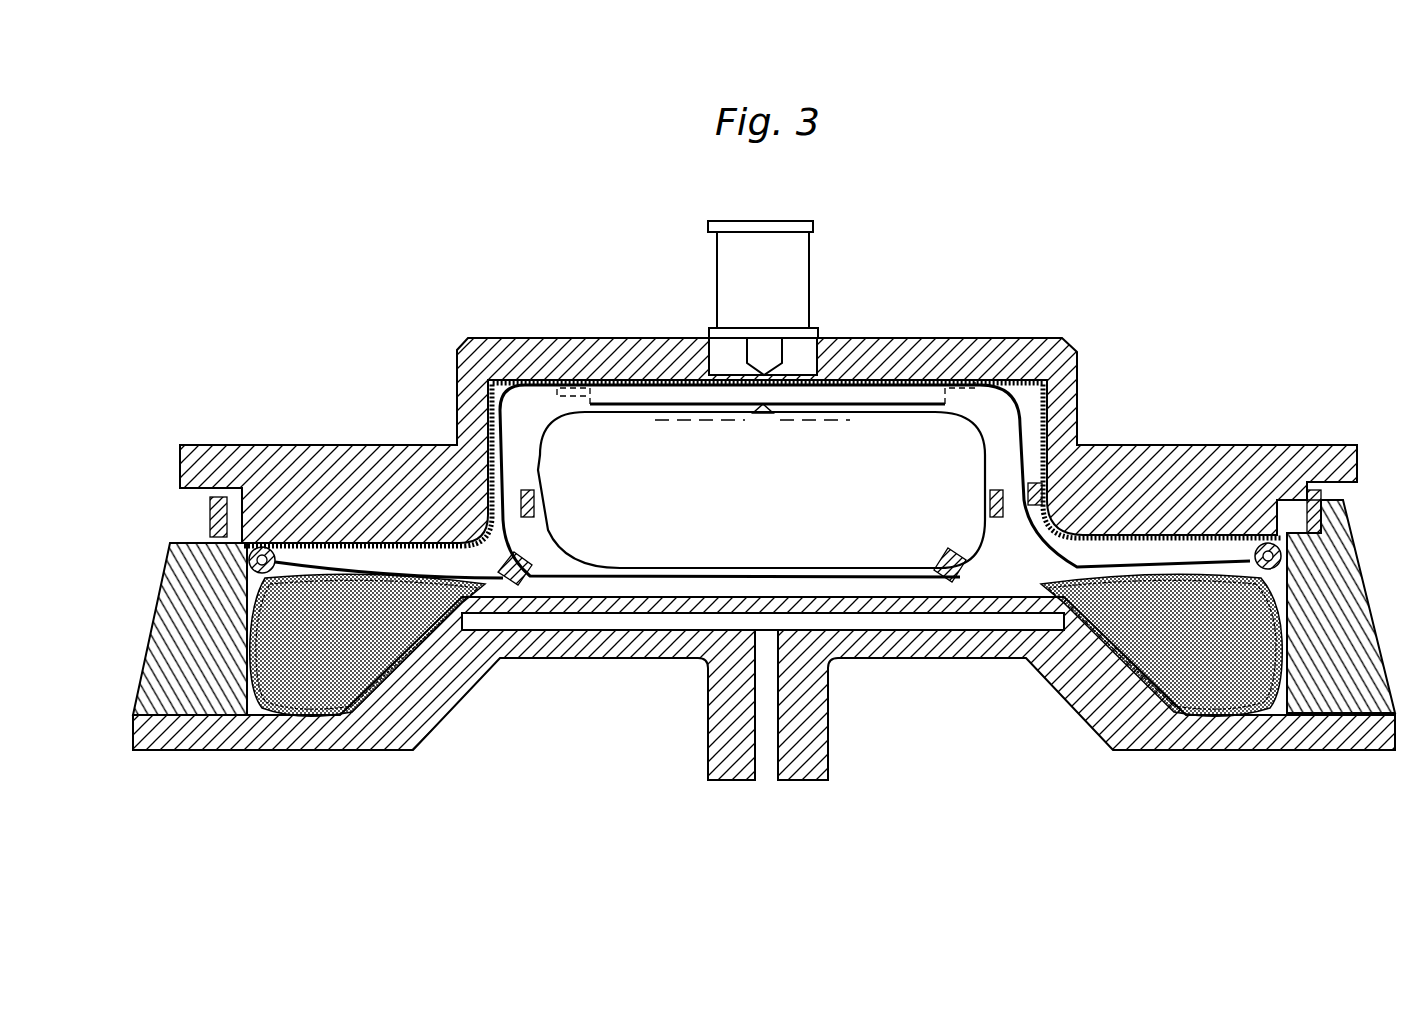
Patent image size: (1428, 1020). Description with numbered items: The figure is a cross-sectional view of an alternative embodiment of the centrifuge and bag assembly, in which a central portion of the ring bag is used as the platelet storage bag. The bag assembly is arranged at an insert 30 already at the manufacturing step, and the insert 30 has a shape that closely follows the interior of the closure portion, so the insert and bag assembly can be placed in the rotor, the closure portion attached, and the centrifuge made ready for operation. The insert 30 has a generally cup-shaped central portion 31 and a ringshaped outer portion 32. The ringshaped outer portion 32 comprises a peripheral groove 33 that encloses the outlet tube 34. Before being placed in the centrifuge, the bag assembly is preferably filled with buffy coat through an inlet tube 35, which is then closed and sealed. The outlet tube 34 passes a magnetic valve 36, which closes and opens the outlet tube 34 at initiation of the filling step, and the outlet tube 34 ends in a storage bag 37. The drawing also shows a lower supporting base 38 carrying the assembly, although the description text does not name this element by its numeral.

The insert 30 is at (905, 410).
The central portion 31 is at (510, 380).
The ringshaped outer portion 32 is at (400, 540).
The peripheral groove 33 is at (250, 572).
The outlet tube 34 is at (302, 555).
The inlet tube 35 is at (962, 565).
The magnetic valve 36 is at (796, 277).
The storage bag 37 is at (652, 450).
The base 38 is at (764, 640).